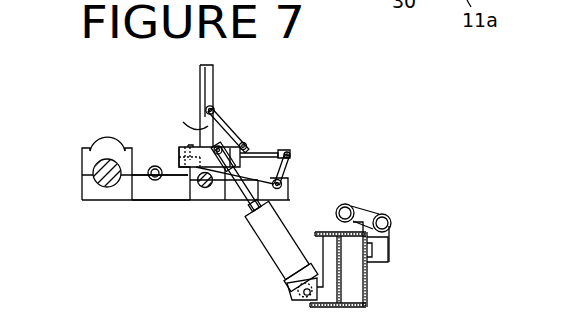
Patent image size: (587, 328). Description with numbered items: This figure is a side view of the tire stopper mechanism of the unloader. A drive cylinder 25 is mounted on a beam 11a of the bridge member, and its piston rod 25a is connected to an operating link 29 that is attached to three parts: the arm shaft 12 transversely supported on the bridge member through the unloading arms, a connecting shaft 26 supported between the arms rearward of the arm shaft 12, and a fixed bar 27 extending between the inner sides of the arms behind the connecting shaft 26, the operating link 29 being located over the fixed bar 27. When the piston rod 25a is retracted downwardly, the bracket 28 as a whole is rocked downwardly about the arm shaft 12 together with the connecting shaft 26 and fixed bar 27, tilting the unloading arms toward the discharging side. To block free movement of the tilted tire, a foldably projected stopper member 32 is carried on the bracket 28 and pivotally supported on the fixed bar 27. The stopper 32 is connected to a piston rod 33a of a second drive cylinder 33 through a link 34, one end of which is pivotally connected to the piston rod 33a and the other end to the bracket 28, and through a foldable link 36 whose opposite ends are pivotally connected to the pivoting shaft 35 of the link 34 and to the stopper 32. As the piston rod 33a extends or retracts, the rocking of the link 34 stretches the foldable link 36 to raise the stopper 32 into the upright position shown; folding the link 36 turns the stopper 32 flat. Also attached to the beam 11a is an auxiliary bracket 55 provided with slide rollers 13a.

The arm shaft 12 is at (103, 186).
The bracket 28 is at (143, 190).
The connecting shaft 26 is at (154, 166).
The fixed bar 27 is at (203, 188).
The foldable link 36 is at (199, 147).
The operating link 29 is at (199, 150).
The stopper member 32 is at (197, 80).
The drive cylinder 33 is at (237, 140).
The piston rod 33a is at (266, 152).
The link 34 is at (293, 161).
The pivoting shaft 35 is at (295, 188).
The drive cylinder 25 is at (272, 255).
The piston rod 25a is at (238, 199).
The beam 11a is at (348, 278).
The auxiliary bracket 55 is at (382, 249).
The slide rollers 13a is at (350, 204).